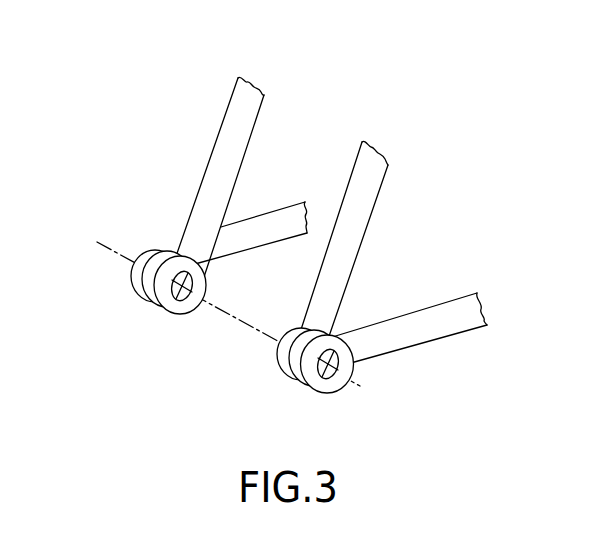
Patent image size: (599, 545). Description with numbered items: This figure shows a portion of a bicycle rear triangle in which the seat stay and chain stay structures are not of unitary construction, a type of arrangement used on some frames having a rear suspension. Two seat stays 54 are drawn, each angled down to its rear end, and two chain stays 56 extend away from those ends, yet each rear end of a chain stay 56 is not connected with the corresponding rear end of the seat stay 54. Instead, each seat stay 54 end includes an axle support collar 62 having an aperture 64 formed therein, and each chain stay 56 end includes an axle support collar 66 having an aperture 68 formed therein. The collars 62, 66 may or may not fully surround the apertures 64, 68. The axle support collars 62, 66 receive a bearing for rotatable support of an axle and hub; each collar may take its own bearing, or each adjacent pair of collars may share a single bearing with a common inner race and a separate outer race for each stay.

The seat stay 54 is at (245, 150).
The chain stay 56 is at (263, 250).
The axle support collar 62 is at (167, 317).
The aperture 64 is at (187, 303).
The axle support collar 66 is at (132, 276).
The aperture 68 is at (156, 260).